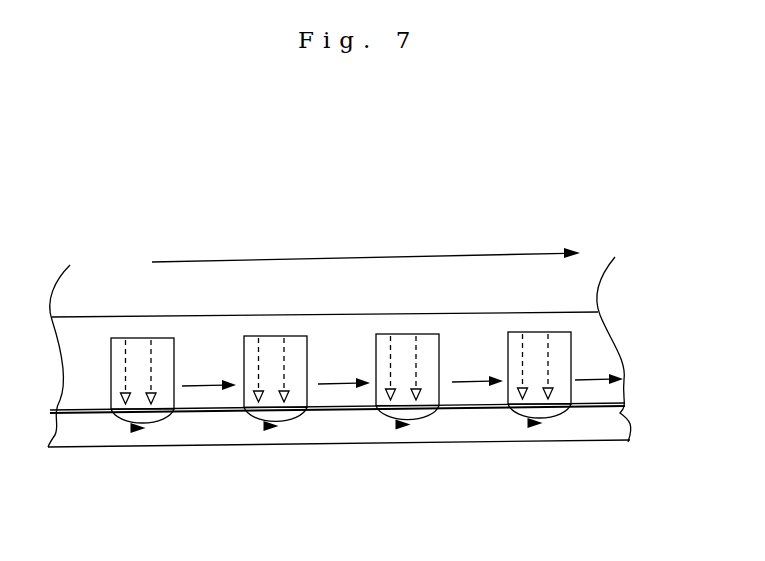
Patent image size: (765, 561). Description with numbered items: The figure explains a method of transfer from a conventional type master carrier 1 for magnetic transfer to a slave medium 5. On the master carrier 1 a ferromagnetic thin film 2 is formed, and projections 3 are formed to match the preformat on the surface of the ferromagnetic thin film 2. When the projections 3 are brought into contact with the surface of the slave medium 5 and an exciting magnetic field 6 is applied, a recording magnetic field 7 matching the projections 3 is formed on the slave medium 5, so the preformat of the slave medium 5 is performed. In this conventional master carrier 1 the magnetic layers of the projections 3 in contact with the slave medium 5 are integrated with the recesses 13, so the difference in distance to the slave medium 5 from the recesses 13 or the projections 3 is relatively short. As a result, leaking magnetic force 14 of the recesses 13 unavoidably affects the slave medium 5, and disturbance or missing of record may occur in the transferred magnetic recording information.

The master carrier for magnetic transfer 1 is at (100, 167).
The ferromagnetic thin film 2 is at (587, 321).
The projections 3 is at (190, 400).
The slave medium 5 is at (228, 438).
The exciting magnetic field 6 is at (490, 247).
The recording magnetic field 7 is at (287, 427).
The recesses 13 is at (118, 338).
The leaking magnetic force 14 is at (153, 357).